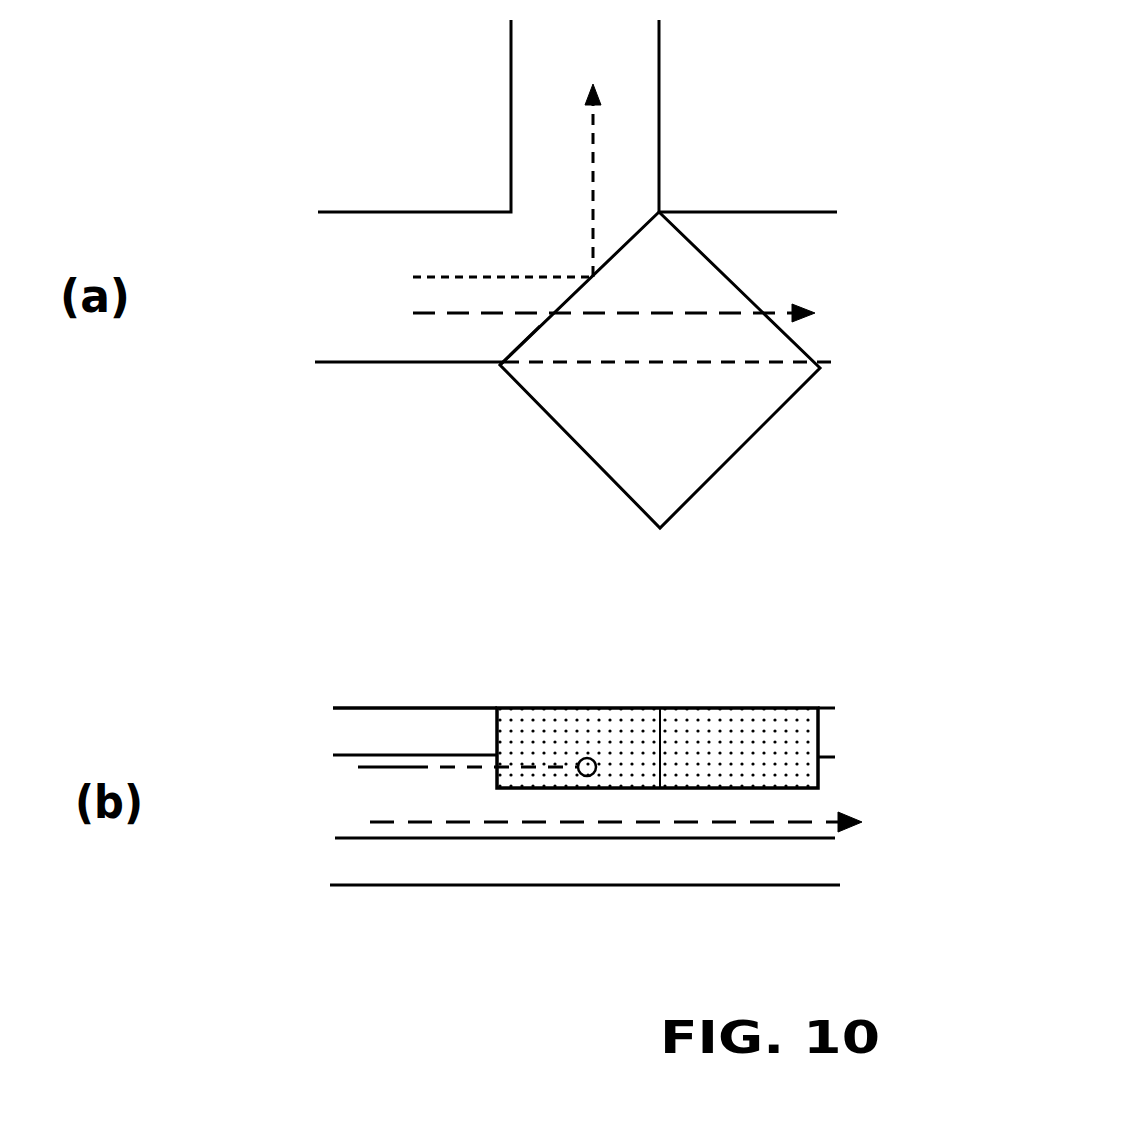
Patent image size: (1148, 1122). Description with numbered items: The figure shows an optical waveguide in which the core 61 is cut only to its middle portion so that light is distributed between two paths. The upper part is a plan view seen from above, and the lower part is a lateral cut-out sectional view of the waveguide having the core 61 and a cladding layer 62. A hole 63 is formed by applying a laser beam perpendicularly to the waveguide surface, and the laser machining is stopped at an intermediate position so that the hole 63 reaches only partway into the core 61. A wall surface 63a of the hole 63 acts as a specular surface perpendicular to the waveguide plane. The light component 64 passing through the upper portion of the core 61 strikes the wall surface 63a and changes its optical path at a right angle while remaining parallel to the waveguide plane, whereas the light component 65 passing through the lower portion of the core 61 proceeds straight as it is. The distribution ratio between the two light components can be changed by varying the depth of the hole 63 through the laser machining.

The core 61 is at (365, 248).
The cladding layer 62 is at (430, 713).
The hole 63 is at (735, 440).
The wall surface 63a is at (517, 350).
The light component 64 is at (593, 138).
The light component 65 is at (785, 300).